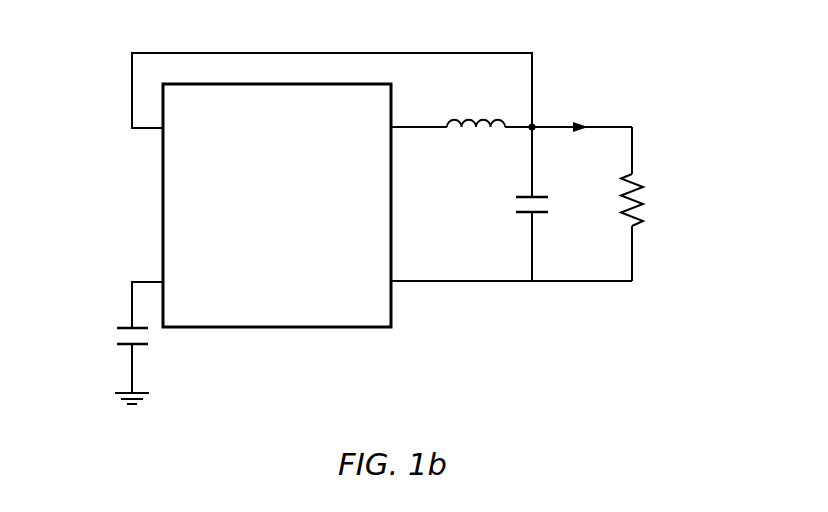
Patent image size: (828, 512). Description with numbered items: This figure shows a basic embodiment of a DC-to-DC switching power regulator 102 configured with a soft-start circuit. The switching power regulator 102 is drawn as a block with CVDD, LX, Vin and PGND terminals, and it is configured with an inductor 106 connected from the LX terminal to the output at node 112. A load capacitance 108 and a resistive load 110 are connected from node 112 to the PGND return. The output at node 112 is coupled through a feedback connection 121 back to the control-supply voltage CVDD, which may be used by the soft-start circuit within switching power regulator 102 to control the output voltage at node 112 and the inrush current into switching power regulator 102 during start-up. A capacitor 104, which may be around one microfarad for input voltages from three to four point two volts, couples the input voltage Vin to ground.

The switching power regulator 102 is at (292, 249).
The capacitor 104 is at (123, 327).
The inductor 106 is at (482, 117).
The load capacitance 108 is at (523, 195).
The resistive load 110 is at (642, 193).
The node 112 is at (534, 124).
The feedback connection from output to CVDD 121 is at (407, 125).